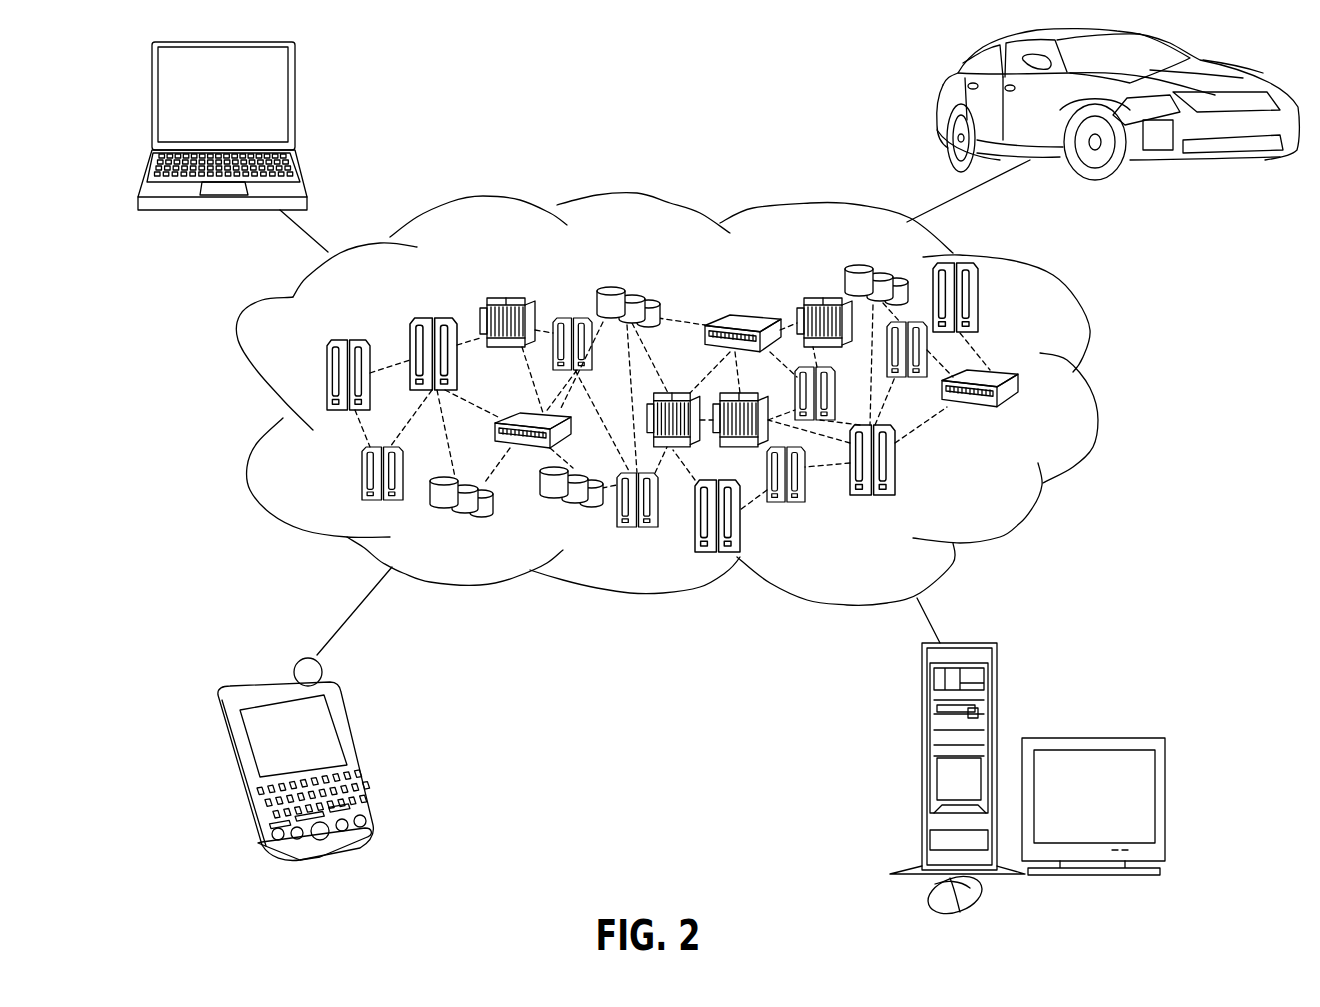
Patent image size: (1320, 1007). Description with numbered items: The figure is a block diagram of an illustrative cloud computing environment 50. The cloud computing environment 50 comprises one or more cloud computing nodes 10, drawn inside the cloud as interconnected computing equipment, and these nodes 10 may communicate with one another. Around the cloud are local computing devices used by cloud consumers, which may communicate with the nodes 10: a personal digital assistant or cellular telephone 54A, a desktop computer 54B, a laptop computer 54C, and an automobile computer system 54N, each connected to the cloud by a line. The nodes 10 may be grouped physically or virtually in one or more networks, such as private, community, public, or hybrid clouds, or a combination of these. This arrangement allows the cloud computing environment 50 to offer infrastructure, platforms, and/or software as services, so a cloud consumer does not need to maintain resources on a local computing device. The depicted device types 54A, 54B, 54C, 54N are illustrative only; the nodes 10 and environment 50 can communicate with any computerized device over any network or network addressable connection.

The cloud computing nodes 10 is at (1000, 490).
The cloud computing environment 50 is at (1090, 387).
The personal digital assistant (PDA) or cellular telephone 54A is at (348, 718).
The desktop computer 54B is at (920, 703).
The laptop computer 54C is at (297, 79).
The automobile computer system 54N is at (936, 98).